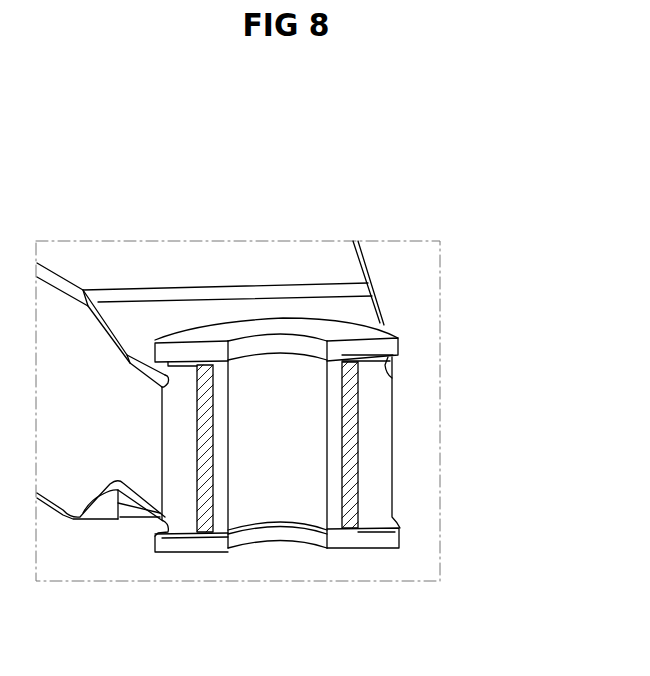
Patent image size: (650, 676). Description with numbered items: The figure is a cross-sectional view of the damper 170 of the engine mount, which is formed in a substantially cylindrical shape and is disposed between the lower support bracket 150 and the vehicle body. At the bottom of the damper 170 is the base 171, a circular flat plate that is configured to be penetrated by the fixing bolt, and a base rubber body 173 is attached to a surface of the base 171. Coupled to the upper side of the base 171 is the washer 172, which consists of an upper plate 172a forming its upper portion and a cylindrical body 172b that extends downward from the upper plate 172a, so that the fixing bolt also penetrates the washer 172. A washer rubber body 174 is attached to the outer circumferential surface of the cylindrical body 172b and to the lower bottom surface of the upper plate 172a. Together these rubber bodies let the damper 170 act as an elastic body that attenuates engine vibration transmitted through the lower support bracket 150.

The lower support bracket 150 is at (187, 249).
The damper 170 is at (343, 416).
The base 171 is at (195, 544).
The washer 172 is at (329, 366).
The upper plate 172a is at (368, 348).
The cylindrical body 172b is at (333, 448).
The base rubber body 173 is at (394, 527).
The washer rubber body 174 is at (350, 408).